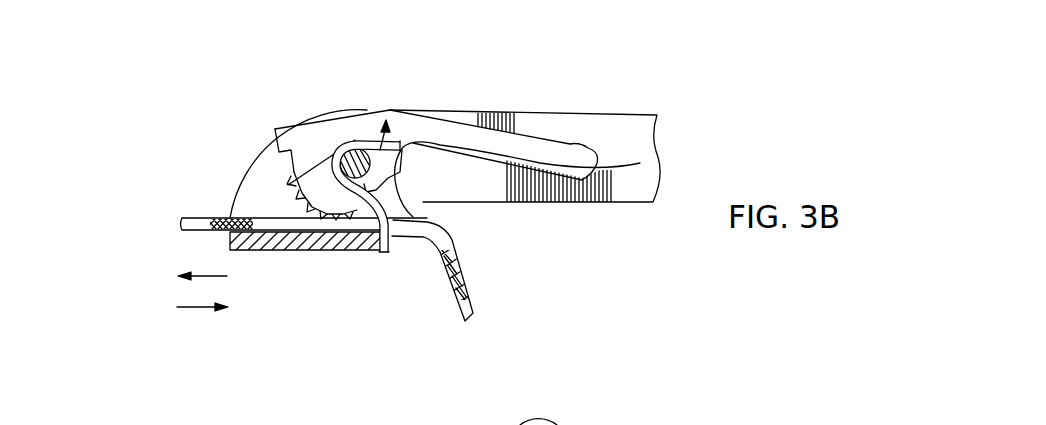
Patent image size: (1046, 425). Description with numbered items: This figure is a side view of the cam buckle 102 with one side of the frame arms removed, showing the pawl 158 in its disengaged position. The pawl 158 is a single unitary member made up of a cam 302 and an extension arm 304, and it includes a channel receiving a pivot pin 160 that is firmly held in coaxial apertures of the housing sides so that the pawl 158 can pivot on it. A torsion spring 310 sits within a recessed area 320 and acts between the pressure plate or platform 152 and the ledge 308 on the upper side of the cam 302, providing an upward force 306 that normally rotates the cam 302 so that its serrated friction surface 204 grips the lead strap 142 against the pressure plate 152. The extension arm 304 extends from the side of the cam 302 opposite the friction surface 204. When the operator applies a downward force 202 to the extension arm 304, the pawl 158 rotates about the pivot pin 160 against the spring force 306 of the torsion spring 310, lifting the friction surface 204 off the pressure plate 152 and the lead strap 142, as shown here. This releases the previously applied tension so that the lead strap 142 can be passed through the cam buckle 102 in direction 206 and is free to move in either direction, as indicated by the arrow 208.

The cam buckle 102 is at (784, 95).
The lead strap 142 is at (448, 236).
The pressure plate or platform 152 is at (330, 251).
The pawl 158 is at (457, 133).
The pivot pin 160 is at (355, 149).
The downward pressure arrow 202 is at (562, 128).
The friction surface 204 is at (320, 203).
The strap passing direction 206 is at (220, 278).
The strap movement direction arrow 208 is at (195, 308).
The cam 302 is at (307, 140).
The extension arm 304 is at (640, 163).
The upward spring force arrow 306 is at (387, 117).
The ledge 308 is at (423, 147).
The torsion spring 310 is at (393, 249).
The recessed area 320 is at (300, 204).